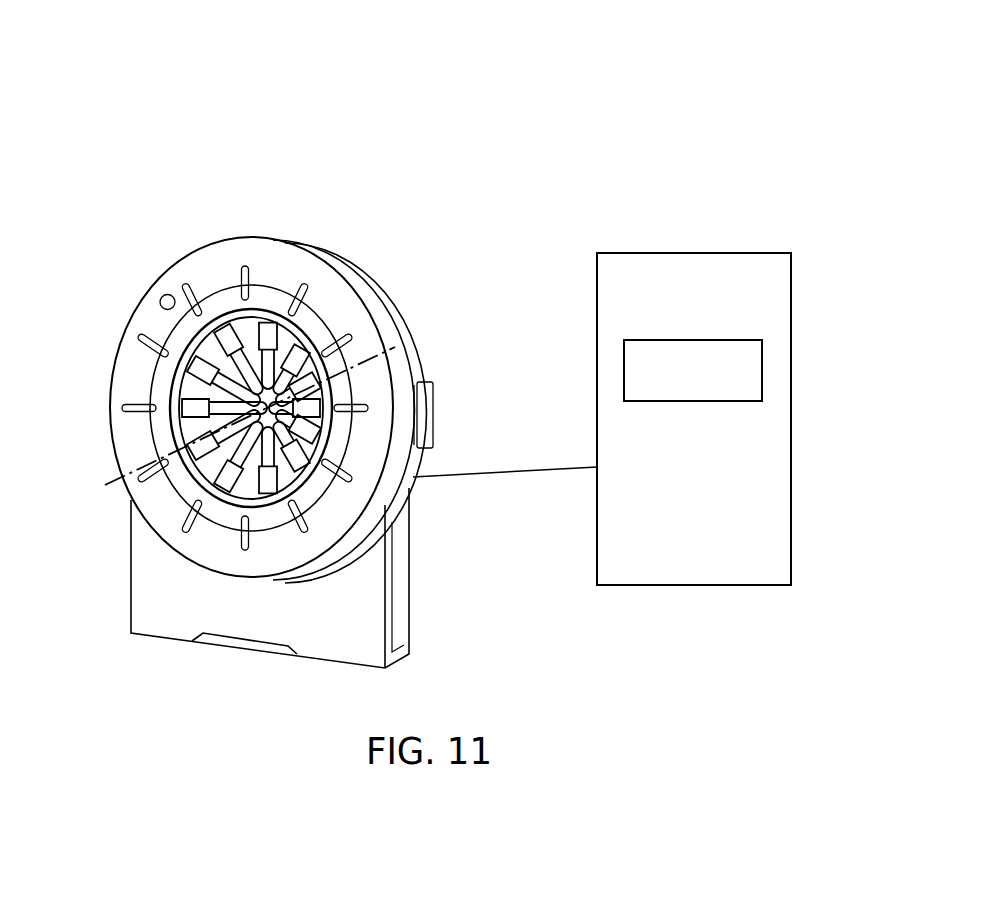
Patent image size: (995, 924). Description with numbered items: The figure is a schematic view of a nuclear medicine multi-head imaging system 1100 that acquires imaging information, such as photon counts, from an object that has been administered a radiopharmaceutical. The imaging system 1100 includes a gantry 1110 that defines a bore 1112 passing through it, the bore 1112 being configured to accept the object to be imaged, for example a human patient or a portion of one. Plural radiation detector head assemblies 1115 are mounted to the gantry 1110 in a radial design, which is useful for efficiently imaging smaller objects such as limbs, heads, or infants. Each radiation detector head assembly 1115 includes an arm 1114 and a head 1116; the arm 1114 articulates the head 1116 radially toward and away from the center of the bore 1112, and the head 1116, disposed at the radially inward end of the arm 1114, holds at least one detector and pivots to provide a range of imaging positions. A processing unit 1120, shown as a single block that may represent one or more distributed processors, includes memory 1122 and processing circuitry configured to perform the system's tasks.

The nuclear medicine multi-head imaging system 1100 is at (641, 84).
The gantry 1110 is at (254, 253).
The bore 1112 is at (200, 468).
The arm 1114 is at (198, 375).
The radiation detector head assembly 1115 is at (297, 356).
The head 1116 is at (288, 400).
The processing unit 1120 is at (697, 252).
The memory 1122 is at (762, 370).